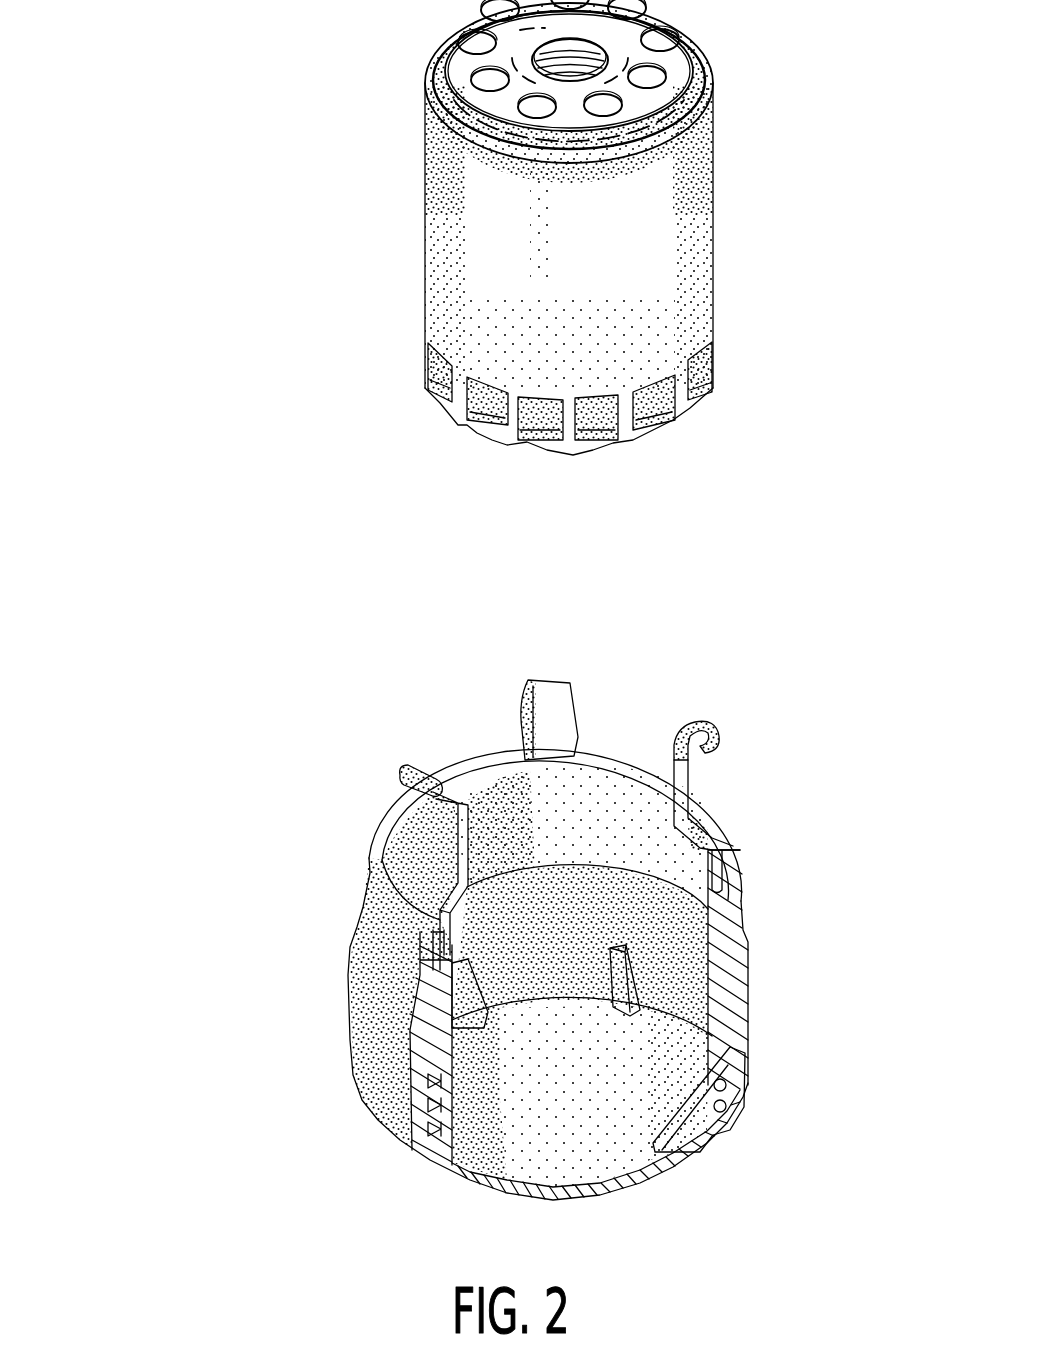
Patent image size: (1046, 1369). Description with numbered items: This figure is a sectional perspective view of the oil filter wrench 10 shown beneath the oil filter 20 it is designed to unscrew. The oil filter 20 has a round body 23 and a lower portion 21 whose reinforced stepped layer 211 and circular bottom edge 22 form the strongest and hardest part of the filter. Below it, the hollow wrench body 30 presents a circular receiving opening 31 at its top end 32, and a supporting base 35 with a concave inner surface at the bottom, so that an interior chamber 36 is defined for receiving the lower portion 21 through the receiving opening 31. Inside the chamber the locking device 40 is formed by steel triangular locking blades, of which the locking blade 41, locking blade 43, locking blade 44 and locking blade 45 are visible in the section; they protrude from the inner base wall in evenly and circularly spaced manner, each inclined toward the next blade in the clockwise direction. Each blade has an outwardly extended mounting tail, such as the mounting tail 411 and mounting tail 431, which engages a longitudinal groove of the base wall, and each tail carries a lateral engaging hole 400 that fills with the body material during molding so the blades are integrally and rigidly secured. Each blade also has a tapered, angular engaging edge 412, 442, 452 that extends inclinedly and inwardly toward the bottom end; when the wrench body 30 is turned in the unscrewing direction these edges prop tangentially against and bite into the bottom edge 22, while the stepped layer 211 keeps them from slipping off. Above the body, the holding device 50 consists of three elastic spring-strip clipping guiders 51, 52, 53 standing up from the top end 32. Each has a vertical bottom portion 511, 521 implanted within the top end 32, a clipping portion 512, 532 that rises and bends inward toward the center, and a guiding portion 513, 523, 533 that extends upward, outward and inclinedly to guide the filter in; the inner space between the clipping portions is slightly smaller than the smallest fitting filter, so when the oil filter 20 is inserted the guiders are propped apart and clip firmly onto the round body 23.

The oil filter wrench 10 is at (480, 939).
The oil filter 20 is at (544, 269).
The lower portion 21 is at (644, 310).
The reinforced stepped layer 211 is at (713, 388).
The circular bottom edge 22 is at (601, 440).
The round body 23 is at (652, 185).
The wrench body 30 is at (494, 973).
The circular receiving opening 31 is at (603, 790).
The top end 32 is at (400, 822).
The supporting base 35 is at (507, 1143).
The interior chamber 36 is at (566, 880).
The locking device 40 is at (643, 1137).
The lateral engaging hole 400 is at (727, 1106).
The locking blade 41 is at (764, 1105).
The mounting tail 411 is at (729, 1052).
The engaging edge 412 is at (700, 1153).
The locking blade 43 is at (314, 1137).
The mounting tail 431 is at (437, 1082).
The locking blade 44 is at (300, 1016).
The engaging edge 442 is at (450, 1015).
The locking blade 45 is at (734, 908).
The engaging edge 452 is at (652, 985).
The holding device 50 is at (534, 783).
The clipping guider 51 is at (768, 758).
The vertical bottom portion 511 is at (726, 866).
The clipping portion 512 is at (690, 770).
The guiding portion 513 is at (697, 720).
The clipping guider 52 is at (336, 839).
The vertical bottom portion 521 is at (430, 935).
The guiding portion 523 is at (425, 775).
The clipping guider 53 is at (511, 678).
The clipping portion 532 is at (545, 722).
The guiding portion 533 is at (557, 690).